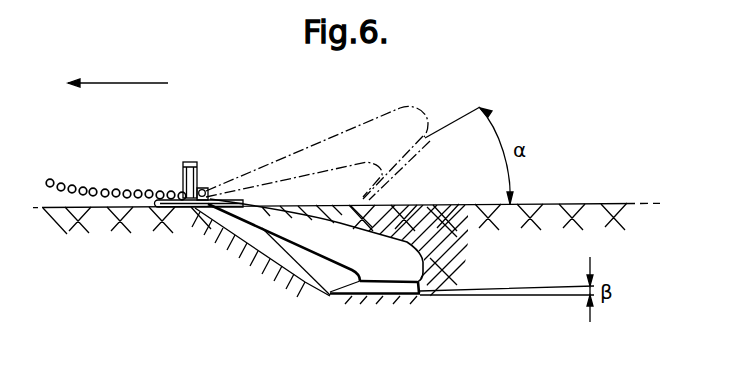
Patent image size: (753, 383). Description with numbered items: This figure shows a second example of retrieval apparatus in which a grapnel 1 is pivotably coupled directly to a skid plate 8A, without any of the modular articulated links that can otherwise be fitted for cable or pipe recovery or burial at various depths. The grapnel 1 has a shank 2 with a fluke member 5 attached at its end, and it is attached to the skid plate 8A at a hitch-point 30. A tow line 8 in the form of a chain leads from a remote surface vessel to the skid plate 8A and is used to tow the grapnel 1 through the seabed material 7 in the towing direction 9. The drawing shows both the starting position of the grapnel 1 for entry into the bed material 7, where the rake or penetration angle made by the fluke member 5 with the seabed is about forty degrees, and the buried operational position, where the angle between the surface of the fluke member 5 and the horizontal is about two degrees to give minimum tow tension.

The grapnel 1 is at (432, 255).
The shank 2 is at (282, 227).
The fluke member 5 is at (378, 292).
The seabed material 7 is at (547, 262).
The tow line 8 is at (115, 191).
The skid plate 8A is at (166, 206).
The towing direction 9 is at (115, 82).
The hitch-point 30 is at (206, 190).